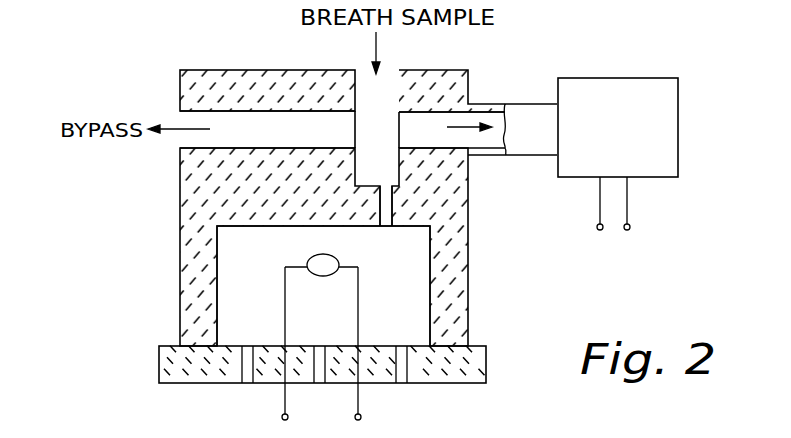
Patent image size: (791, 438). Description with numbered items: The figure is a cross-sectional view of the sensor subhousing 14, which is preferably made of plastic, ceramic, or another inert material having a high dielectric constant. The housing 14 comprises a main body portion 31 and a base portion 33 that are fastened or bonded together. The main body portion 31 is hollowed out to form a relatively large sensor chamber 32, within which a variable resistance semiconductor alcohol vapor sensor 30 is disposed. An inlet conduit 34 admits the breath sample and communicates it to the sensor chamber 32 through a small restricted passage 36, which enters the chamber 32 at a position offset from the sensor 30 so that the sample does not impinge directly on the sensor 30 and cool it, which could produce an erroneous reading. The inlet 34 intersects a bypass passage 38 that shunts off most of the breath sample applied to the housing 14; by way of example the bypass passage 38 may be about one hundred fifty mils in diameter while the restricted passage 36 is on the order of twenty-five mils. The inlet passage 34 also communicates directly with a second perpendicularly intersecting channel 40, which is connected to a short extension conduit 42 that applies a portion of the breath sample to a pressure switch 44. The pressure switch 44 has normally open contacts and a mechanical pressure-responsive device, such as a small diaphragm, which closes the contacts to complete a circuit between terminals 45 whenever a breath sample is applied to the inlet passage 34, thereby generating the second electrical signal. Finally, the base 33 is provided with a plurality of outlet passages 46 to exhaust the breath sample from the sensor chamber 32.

The sensor subhousing 14 is at (218, 76).
The variable resistance semiconductor alcohol vapor sensor 30 is at (313, 258).
The main body portion 31 is at (180, 258).
The sensor chamber 32 is at (430, 300).
The base portion 33 is at (160, 362).
The inlet conduit 34 is at (393, 72).
The restricted passage 36 is at (391, 228).
The bypass passage 38 is at (182, 115).
The second perpendicularly intersecting channel 40 is at (469, 113).
The short extension conduit 42 is at (489, 157).
The pressure switch 44 is at (663, 165).
The terminals 45 is at (600, 230).
The outlet passages 46 is at (321, 378).